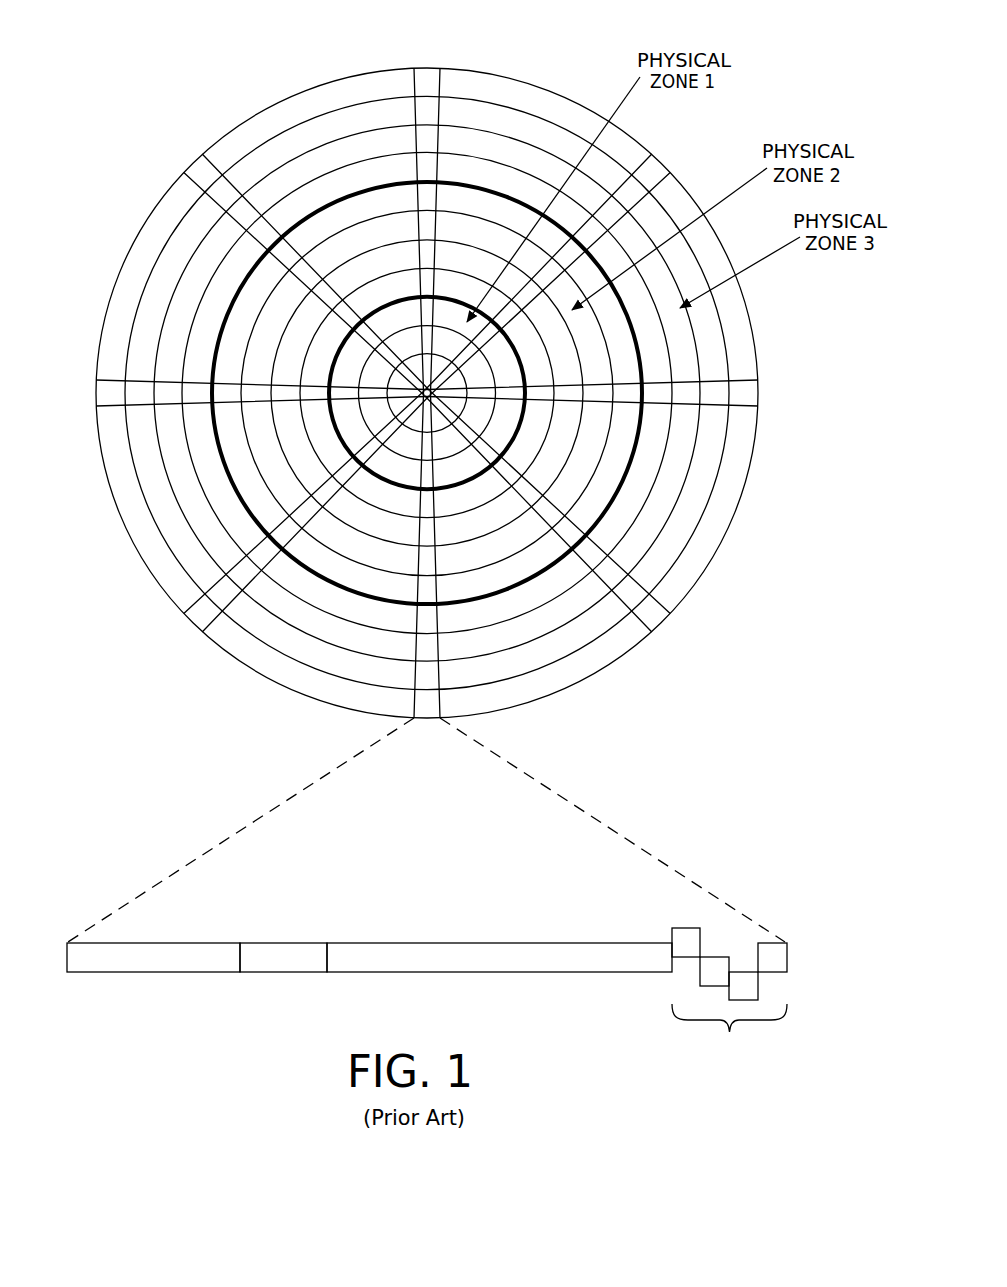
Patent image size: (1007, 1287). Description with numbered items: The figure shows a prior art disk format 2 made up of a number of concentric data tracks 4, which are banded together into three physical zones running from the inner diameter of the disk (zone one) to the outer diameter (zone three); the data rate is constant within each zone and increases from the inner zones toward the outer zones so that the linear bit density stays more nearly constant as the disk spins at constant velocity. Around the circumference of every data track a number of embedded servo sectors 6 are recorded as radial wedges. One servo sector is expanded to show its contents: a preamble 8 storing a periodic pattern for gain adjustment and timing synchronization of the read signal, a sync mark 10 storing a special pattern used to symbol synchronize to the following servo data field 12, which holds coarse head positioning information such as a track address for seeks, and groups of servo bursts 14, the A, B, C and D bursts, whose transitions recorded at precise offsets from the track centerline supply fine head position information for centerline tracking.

The disk format 2 is at (427, 403).
The data tracks 4 is at (537, 133).
The embedded servo sectors 6 is at (282, 797).
The preamble 8 is at (133, 974).
The sync mark 10 is at (282, 974).
The servo data field 12 is at (486, 974).
The servo bursts 14 is at (660, 911).